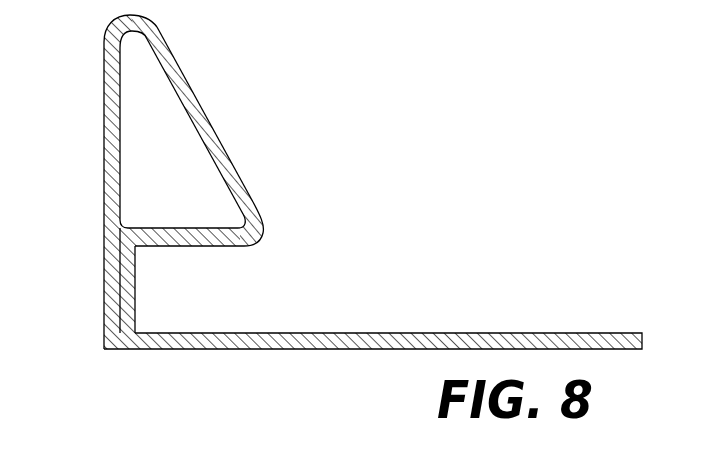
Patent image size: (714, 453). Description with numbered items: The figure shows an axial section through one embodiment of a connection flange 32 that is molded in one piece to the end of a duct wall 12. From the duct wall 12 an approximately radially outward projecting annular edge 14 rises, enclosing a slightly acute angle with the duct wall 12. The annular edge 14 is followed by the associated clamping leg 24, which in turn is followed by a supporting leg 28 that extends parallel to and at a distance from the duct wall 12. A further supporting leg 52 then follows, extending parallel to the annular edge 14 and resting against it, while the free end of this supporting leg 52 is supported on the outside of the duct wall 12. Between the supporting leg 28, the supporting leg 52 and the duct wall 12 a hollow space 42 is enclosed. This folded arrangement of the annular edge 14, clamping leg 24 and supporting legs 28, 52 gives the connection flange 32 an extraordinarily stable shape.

The duct wall 12 is at (431, 340).
The annular edge 14 is at (110, 148).
The clamping leg 24 is at (248, 192).
The supporting leg 28 is at (222, 235).
The connection flange 32 is at (204, 101).
The channel cavity 42 is at (156, 302).
The supporting leg 52 is at (122, 272).